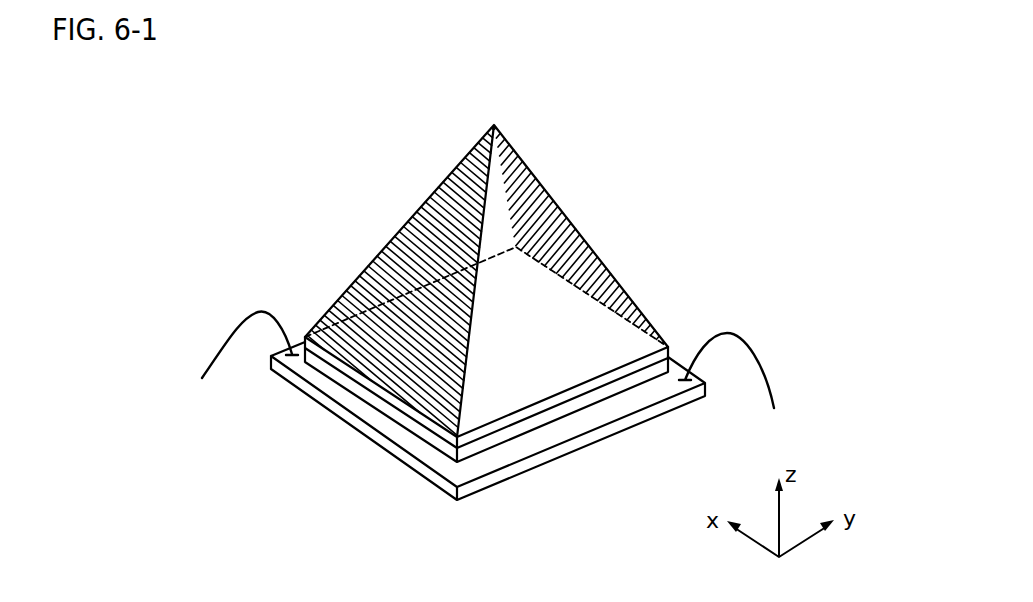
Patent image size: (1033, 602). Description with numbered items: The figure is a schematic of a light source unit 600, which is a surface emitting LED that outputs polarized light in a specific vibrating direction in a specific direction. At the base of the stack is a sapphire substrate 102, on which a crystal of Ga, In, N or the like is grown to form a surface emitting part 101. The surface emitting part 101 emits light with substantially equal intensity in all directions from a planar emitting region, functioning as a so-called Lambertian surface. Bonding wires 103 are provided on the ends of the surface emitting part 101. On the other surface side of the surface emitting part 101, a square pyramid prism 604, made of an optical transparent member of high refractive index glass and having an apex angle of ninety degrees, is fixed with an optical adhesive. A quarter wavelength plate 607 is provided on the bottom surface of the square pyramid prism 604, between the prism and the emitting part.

The light source unit 600 is at (660, 142).
The square pyramid prism 604 is at (466, 157).
The quarter wavelength plate 607 is at (382, 393).
The surface emitting part 101 is at (595, 412).
The sapphire substrate 102 is at (518, 432).
The bonding wires 103 is at (263, 312).